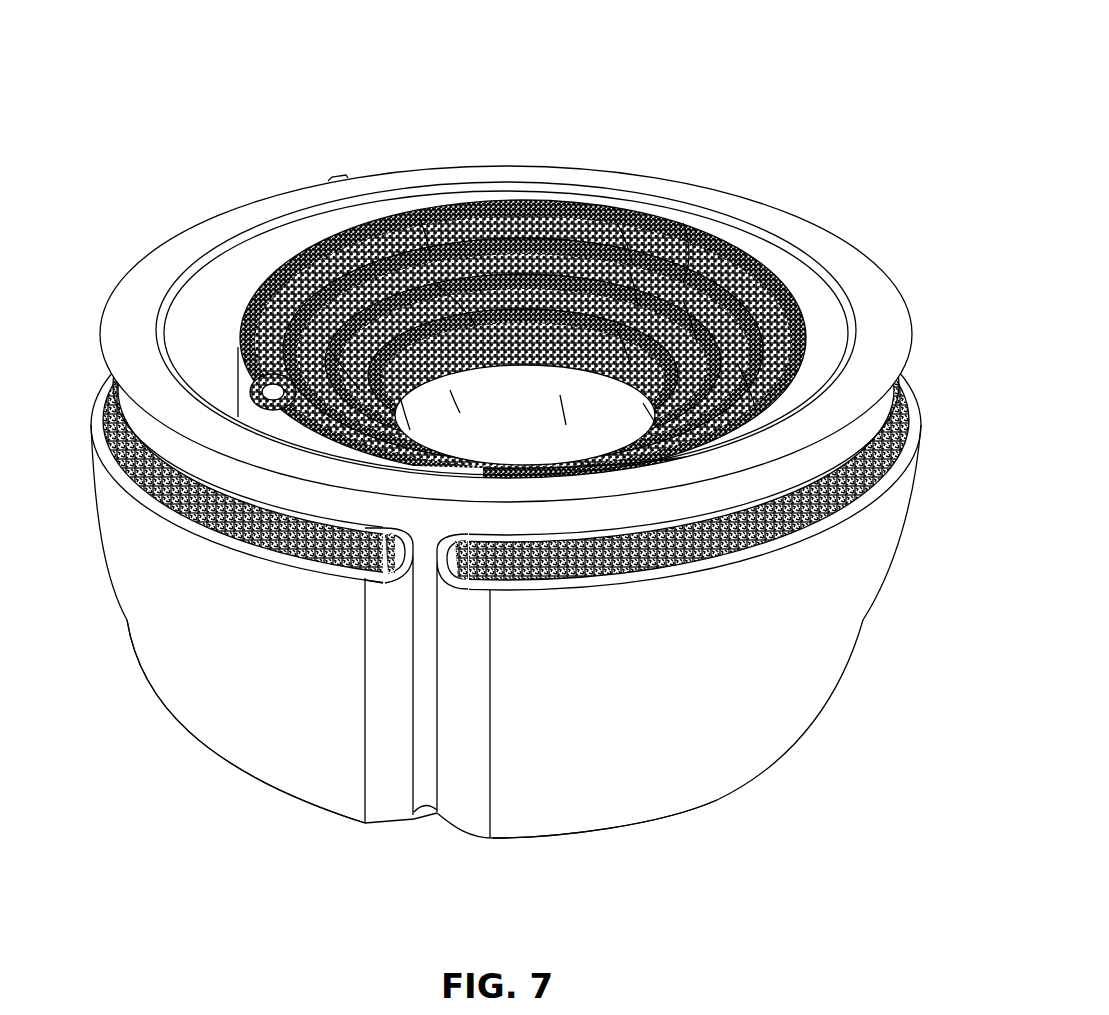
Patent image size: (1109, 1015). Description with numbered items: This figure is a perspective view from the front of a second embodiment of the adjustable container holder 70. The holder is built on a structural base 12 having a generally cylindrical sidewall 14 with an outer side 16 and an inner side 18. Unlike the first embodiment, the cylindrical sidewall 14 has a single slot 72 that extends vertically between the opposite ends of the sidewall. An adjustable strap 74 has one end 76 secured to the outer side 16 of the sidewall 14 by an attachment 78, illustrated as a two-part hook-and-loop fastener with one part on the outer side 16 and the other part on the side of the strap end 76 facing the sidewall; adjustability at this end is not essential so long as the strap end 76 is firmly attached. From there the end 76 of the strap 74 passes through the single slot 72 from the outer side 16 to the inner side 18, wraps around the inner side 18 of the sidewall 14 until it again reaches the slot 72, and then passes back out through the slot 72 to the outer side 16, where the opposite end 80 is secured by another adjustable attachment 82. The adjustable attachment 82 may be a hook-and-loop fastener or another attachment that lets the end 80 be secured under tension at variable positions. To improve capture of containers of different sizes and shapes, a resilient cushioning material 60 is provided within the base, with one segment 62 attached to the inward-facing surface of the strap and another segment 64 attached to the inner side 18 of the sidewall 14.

The adjustable container holder 70 is at (502, 463).
The structural base 12 is at (506, 303).
The cylindrical sidewall 14 is at (495, 180).
The outer side 16 is at (506, 425).
The inner side 18 is at (222, 275).
The resilient cushioning material 60 is at (522, 302).
The cushioning segment 62 is at (523, 338).
The cushioning segment 64 is at (584, 462).
The single slot 72 is at (421, 819).
The adjustable strap 74 is at (630, 832).
The strap end 76 is at (821, 703).
The attachment 78 is at (886, 448).
The strap end 80 is at (233, 762).
The adjustable attachment 82 is at (133, 466).